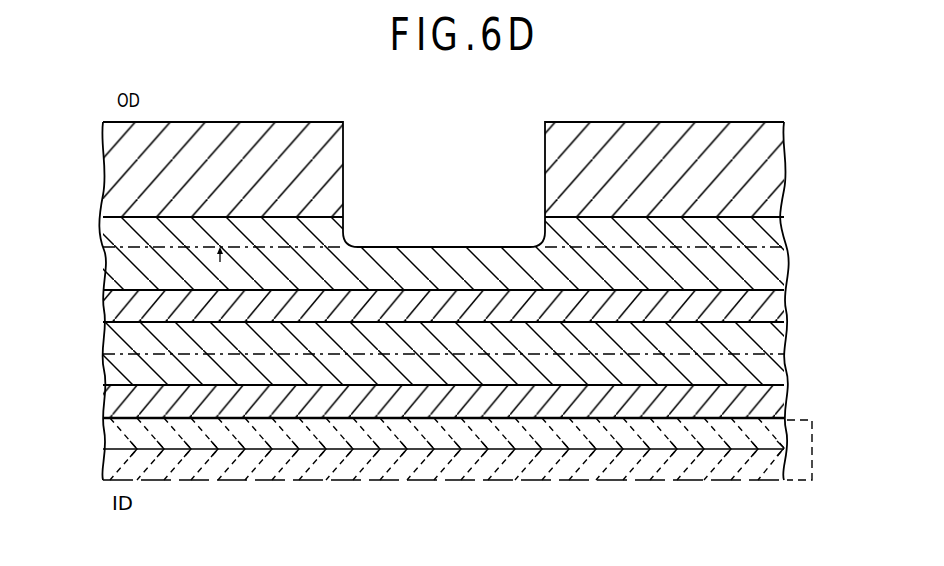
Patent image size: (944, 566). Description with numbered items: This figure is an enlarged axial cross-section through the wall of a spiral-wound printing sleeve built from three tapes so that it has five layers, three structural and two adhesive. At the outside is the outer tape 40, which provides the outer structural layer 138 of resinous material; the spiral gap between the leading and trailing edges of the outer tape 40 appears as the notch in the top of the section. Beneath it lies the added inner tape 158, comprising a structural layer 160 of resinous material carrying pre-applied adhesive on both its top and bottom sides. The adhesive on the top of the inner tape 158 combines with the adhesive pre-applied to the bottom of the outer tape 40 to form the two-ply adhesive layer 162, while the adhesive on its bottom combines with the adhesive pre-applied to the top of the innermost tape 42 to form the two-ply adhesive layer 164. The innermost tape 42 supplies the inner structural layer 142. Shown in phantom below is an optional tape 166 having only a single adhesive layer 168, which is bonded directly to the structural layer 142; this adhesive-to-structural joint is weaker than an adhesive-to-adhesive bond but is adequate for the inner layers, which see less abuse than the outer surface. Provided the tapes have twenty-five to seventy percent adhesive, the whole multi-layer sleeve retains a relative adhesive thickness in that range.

The outer tape 40 is at (196, 112).
The outer structural layer 138 is at (257, 130).
The two-ply adhesive layer 162 is at (748, 238).
The inner tape 158 is at (795, 249).
The structural layer 160 is at (712, 317).
The two-ply adhesive layer 164 is at (135, 367).
The inner structural layer 142 is at (137, 401).
The innermost tape 42 is at (130, 424).
The tape 166 is at (818, 440).
The adhesive layer 168 is at (566, 455).